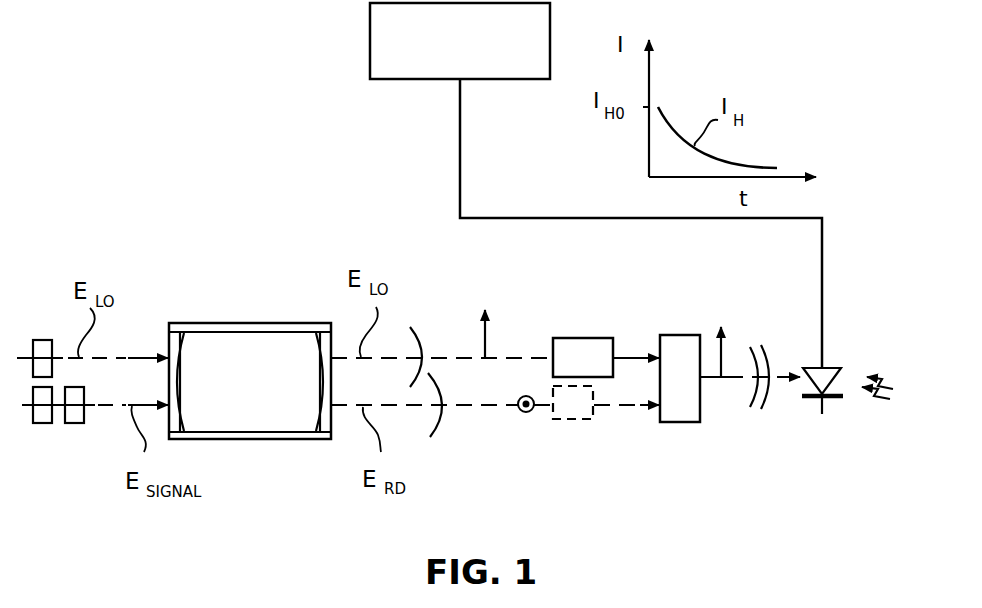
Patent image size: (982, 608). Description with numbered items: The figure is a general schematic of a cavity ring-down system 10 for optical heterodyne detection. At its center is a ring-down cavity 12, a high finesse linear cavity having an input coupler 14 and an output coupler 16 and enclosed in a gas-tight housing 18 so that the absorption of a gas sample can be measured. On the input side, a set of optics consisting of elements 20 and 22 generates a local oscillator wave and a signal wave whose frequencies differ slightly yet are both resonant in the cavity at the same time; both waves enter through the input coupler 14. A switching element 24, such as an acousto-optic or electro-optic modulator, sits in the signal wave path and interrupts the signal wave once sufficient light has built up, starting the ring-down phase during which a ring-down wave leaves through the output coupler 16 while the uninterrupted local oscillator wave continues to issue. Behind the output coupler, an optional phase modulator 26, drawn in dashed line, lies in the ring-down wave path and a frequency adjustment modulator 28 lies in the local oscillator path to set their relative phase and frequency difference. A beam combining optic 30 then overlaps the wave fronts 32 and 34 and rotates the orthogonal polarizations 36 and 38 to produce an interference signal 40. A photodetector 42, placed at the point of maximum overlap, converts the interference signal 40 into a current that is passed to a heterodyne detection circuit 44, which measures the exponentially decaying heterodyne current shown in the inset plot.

The cavity ring-down system 10 is at (226, 189).
The ring-down cavity 12 is at (251, 294).
The input coupler 14 is at (170, 345).
The output coupler 16 is at (329, 345).
The gas-tight housing 18 is at (271, 440).
The optical element generating local oscillator wave 20 is at (40, 340).
The optical element generating signal wave 22 is at (45, 424).
The switching element 24 is at (79, 424).
The phase modulator 26 is at (575, 420).
The frequency adjustment unit or modulator 28 is at (577, 338).
The beam combining optic 30 is at (672, 335).
The wave front 32 is at (408, 332).
The wave front 34 is at (437, 437).
The polarization 36 is at (492, 337).
The polarization 38 is at (521, 412).
The interference signal 40 is at (703, 382).
The photodetector 42 is at (806, 400).
The heterodyne detection circuit 44 is at (370, 52).